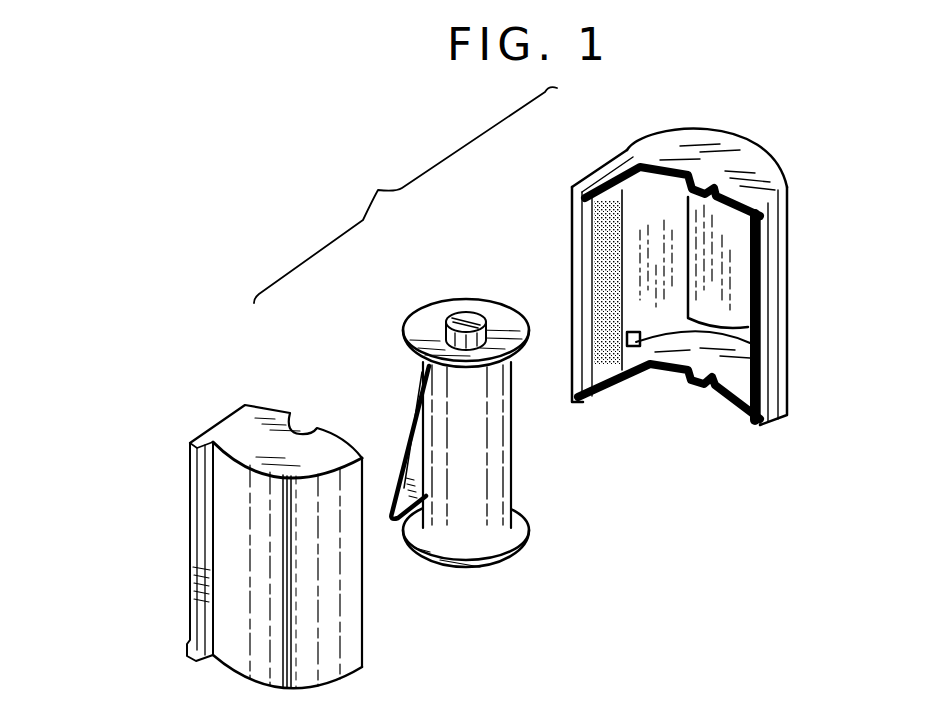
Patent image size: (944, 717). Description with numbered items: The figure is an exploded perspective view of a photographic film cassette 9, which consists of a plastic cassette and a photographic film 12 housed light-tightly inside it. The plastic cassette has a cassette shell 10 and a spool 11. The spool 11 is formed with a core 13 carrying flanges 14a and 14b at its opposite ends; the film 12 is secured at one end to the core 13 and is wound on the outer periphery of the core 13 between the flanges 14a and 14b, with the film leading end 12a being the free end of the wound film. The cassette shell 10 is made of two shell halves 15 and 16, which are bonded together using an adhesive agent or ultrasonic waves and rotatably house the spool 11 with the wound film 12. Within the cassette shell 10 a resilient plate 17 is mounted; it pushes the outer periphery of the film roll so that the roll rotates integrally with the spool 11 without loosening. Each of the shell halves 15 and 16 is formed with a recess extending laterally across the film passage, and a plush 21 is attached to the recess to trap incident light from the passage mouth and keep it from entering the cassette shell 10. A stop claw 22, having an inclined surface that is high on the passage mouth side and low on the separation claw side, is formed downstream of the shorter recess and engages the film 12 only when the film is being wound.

The photographic film cassette 9 is at (208, 369).
The cassette shell 10 is at (405, 195).
The spool 11 is at (536, 546).
The photographic film 12 is at (522, 447).
The film leading end 12a is at (410, 463).
The core 13 is at (445, 333).
The flange 14a is at (502, 313).
The flange 14b is at (436, 555).
The shell half 15 is at (608, 137).
The shell half 16 is at (272, 397).
The resilient plate 17 is at (733, 290).
The plush 21 is at (614, 287).
The stop claw 22 is at (648, 371).